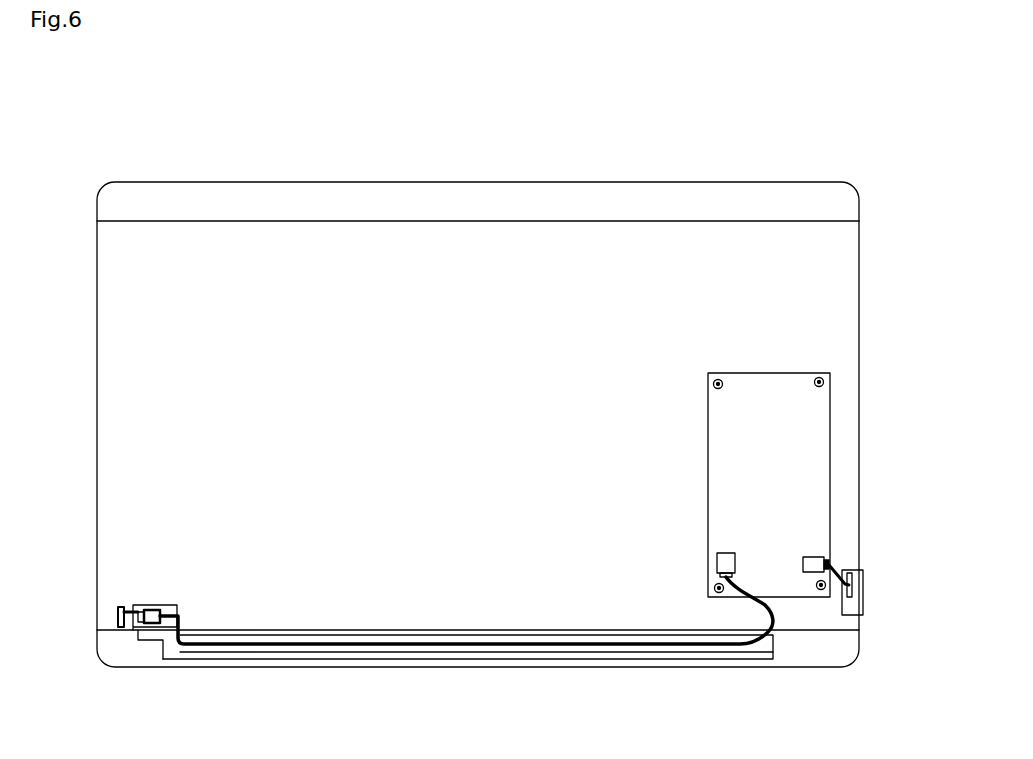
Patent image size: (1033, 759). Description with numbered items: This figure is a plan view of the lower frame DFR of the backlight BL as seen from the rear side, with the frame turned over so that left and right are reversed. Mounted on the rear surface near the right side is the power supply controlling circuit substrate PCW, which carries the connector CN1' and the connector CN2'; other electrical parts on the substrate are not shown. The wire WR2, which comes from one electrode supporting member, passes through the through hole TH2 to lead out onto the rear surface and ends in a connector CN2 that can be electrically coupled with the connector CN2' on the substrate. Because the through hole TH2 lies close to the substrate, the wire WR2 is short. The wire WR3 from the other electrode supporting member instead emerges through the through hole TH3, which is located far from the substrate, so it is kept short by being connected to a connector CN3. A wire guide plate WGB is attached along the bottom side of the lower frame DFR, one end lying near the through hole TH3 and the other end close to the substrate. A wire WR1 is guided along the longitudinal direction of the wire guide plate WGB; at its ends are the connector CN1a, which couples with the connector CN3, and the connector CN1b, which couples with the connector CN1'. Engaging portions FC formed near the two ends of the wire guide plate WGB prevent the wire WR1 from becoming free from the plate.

The backlight unit BL is at (261, 165).
The lower frame DFR is at (345, 278).
The power supply controlling circuit substrate PCW is at (753, 370).
The connector CN1' is at (685, 544).
The connector CN1b is at (716, 586).
The connector CN2' is at (840, 526).
The connector CN2 is at (867, 544).
The through hole TH2 is at (863, 585).
The wire WR2 is at (840, 584).
The wire WR1 is at (303, 648).
The wire guide plate WGB is at (491, 654).
The engaging portion FC is at (213, 644).
The connector CN3 is at (135, 633).
The connector CN1a is at (152, 628).
The through hole TH3 is at (117, 618).
The wire WR3 is at (128, 605).